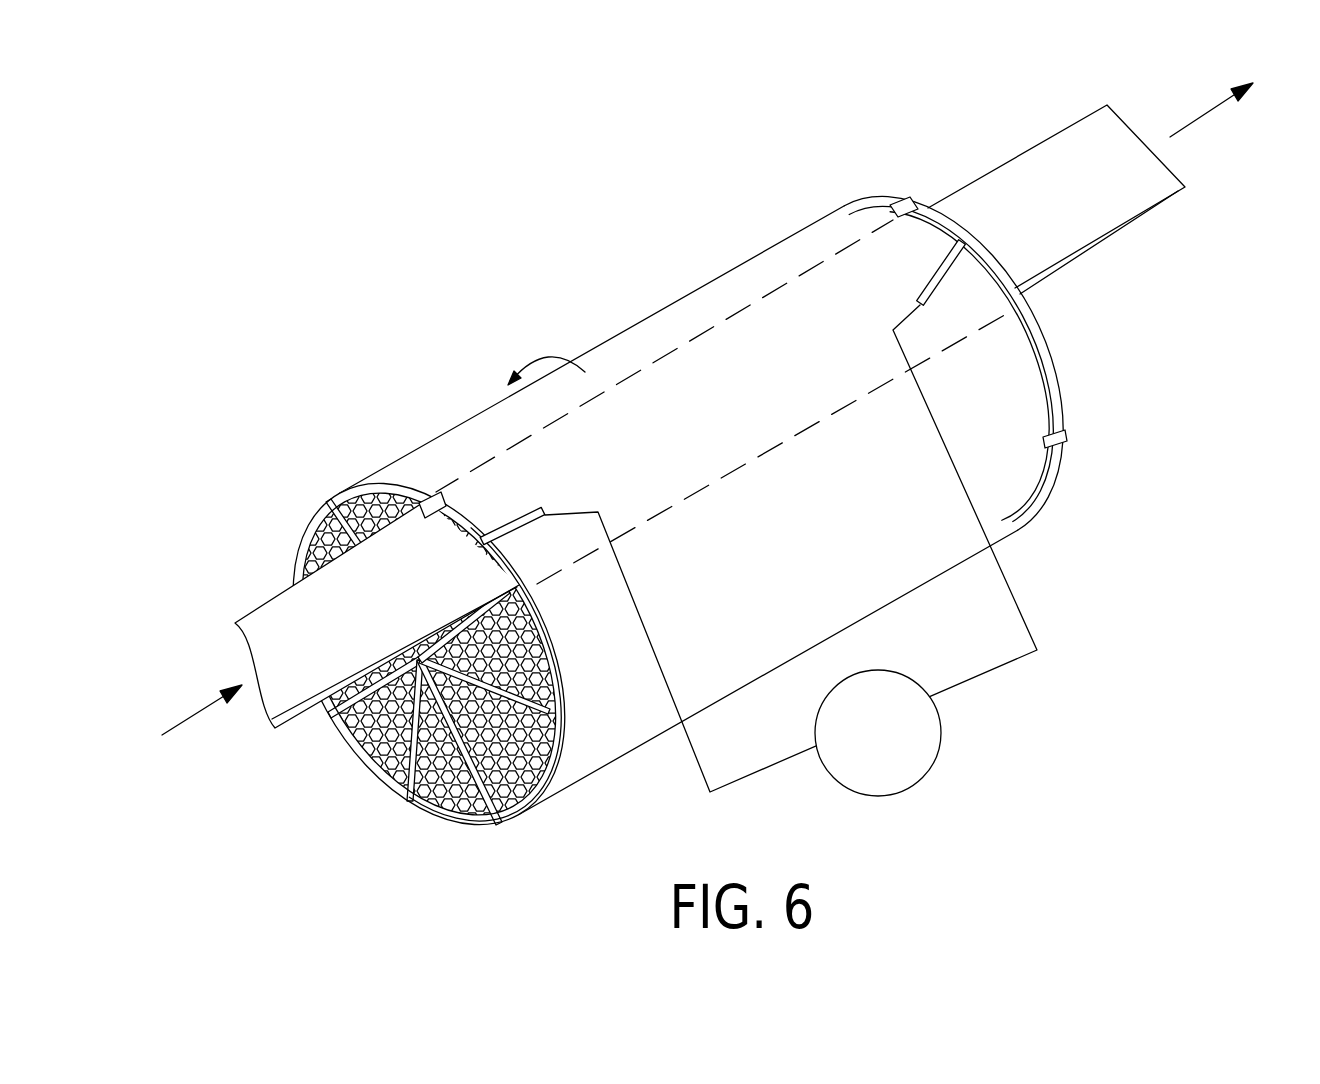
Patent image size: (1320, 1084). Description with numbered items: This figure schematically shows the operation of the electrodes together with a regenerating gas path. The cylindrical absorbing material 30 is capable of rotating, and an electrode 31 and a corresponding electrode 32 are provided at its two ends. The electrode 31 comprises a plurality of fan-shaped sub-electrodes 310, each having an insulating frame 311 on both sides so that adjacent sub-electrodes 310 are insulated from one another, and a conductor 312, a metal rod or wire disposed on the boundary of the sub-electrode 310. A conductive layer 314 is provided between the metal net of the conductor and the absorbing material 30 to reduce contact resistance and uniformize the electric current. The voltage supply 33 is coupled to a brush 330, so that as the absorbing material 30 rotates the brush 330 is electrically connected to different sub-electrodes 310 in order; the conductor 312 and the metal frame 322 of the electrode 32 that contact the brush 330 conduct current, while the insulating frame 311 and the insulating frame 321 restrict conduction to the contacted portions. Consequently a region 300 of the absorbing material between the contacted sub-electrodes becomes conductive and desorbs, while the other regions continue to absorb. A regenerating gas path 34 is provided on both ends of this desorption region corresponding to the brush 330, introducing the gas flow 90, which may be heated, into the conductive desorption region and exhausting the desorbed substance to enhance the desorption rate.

The absorbing material 30 is at (706, 288).
The electrode 31 is at (693, 488).
The electrode 32 is at (942, 323).
The voltage supply 33 is at (900, 676).
The regenerating gas path 34 is at (268, 623).
The gas flow 90 is at (195, 700).
The region of the absorbing material 300 is at (658, 358).
The sub-electrode 310 is at (310, 572).
The insulating frame 311 is at (428, 497).
The conductor 312 is at (456, 519).
The conductive layer 314 is at (555, 660).
The insulating frame 321 is at (928, 176).
The metal frame 322 is at (985, 260).
The brush 330 is at (545, 506).